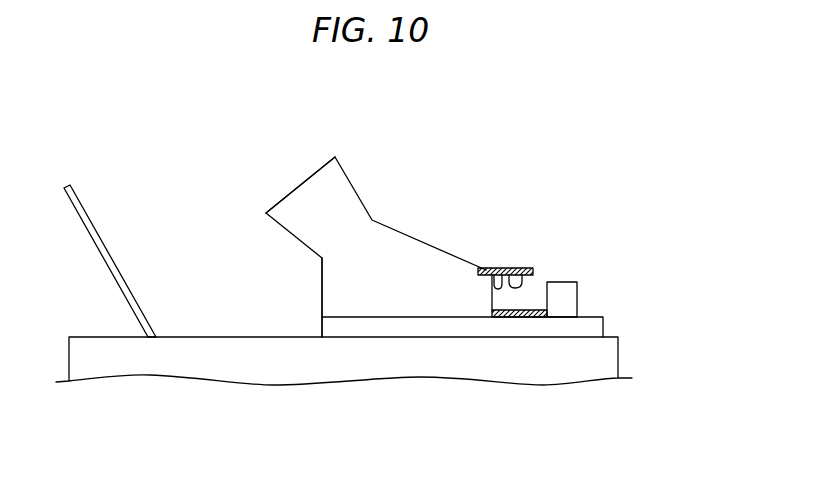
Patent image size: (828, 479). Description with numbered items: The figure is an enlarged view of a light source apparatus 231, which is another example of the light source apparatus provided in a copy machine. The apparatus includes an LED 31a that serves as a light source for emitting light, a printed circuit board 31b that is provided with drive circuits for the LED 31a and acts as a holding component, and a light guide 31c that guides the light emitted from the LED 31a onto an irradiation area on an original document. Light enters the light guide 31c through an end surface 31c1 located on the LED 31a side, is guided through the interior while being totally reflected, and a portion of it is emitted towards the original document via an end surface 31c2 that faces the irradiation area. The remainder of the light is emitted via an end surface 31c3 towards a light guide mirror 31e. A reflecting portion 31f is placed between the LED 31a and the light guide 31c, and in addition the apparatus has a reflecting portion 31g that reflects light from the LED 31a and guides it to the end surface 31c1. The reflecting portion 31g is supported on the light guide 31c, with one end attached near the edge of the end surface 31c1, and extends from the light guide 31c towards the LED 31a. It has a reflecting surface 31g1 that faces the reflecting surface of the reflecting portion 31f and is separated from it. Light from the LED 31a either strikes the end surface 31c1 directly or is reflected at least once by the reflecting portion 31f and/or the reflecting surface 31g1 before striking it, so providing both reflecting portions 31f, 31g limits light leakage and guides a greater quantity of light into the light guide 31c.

The LED 31a is at (565, 285).
The printed circuit board 31b is at (430, 330).
The light guide 31c is at (352, 200).
The end surface 31c1 is at (492, 268).
The end surface 31c2 is at (310, 176).
The end surface 31c3 is at (322, 283).
The light guide mirror 31e is at (88, 217).
The reflecting portion 31f is at (538, 308).
The reflecting portion 31g is at (502, 273).
The reflecting surface 31g1 is at (518, 275).
The light source apparatus 231 is at (611, 292).